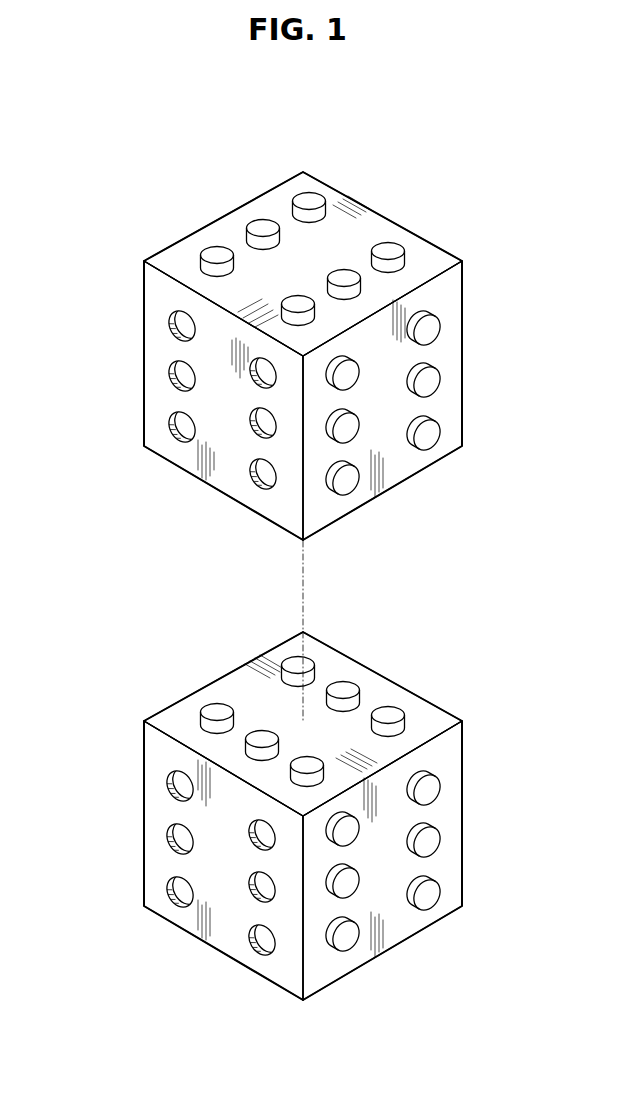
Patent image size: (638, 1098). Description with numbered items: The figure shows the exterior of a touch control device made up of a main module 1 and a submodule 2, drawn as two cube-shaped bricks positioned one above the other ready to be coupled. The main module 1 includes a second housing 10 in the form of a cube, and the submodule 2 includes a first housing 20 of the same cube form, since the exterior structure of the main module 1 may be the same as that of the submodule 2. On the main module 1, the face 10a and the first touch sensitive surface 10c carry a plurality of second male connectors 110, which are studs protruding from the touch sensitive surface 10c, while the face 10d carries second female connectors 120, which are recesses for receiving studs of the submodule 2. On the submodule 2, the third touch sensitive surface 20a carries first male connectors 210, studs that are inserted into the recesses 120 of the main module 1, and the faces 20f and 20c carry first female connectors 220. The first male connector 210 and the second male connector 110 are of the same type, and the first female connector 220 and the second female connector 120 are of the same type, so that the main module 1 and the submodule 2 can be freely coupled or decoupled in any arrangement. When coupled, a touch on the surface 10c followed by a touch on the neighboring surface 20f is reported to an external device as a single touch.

The main module 1 is at (122, 229).
The second housing 10 is at (144, 261).
The face 10a is at (219, 240).
The first touch sensitive surface 10c is at (450, 347).
The face 10d is at (234, 486).
The second male connector 110 is at (306, 198).
The second female connector 120 is at (177, 437).
The submodule 2 is at (122, 690).
The first housing 20 is at (144, 721).
The third touch sensitive surface 20a is at (219, 700).
The touch sensitive surface 20f is at (450, 807).
The face 20c is at (210, 928).
The first male connector 210 is at (175, 901).
The first female connector 220 is at (433, 897).